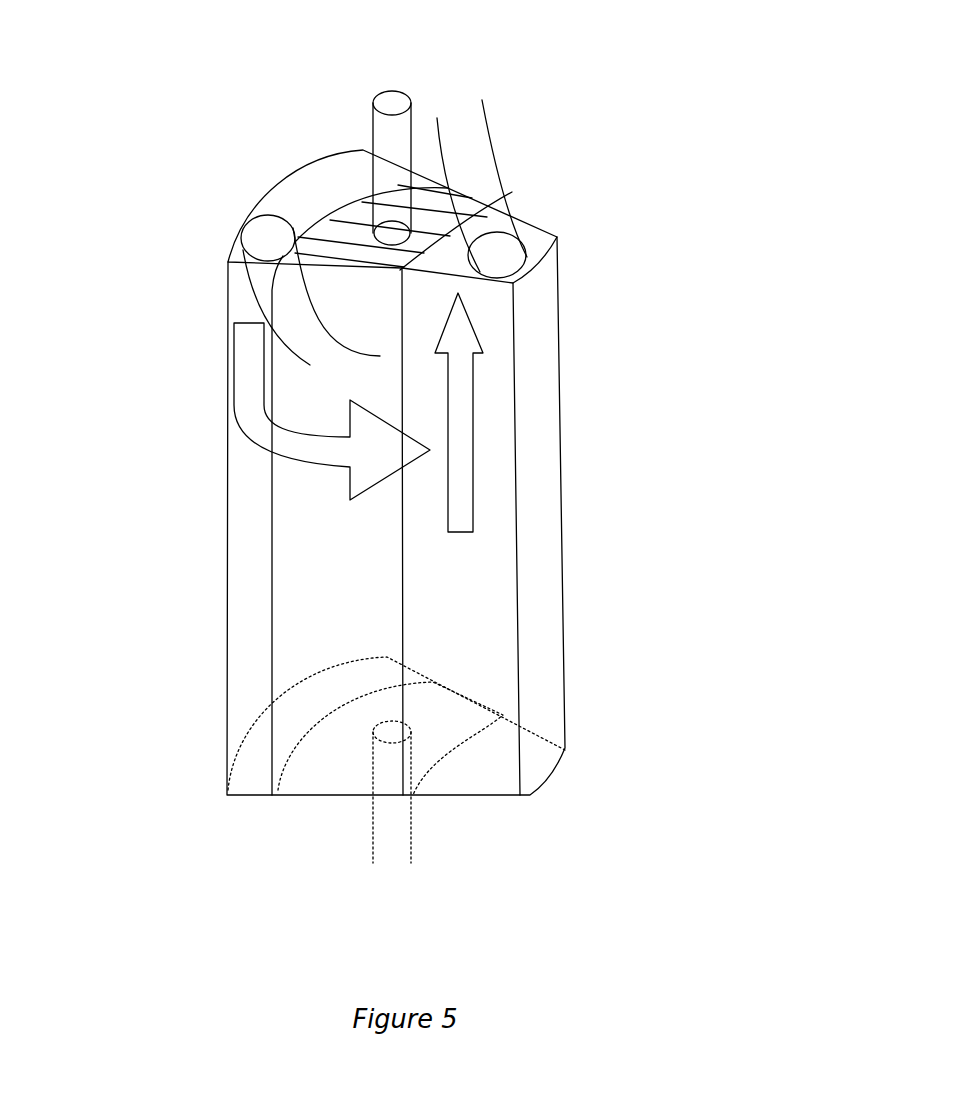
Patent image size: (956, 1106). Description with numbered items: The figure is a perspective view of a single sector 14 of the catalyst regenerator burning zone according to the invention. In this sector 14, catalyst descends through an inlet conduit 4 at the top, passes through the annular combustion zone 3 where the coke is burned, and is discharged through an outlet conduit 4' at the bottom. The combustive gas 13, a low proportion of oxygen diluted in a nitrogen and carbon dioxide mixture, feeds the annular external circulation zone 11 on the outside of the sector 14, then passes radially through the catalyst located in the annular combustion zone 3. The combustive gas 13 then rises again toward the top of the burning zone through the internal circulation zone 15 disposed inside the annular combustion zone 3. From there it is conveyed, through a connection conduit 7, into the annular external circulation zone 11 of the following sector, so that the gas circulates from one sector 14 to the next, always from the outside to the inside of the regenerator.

The annular combustion zone 3 is at (427, 222).
The inlet conduit 4 is at (350, 124).
The outlet conduit 4' is at (289, 827).
The connection conduit 7 is at (493, 203).
The annular external circulation zone 11 is at (248, 602).
The combustive gas 13 is at (300, 443).
The sector 14 is at (573, 850).
The internal circulation zone 15 is at (447, 587).